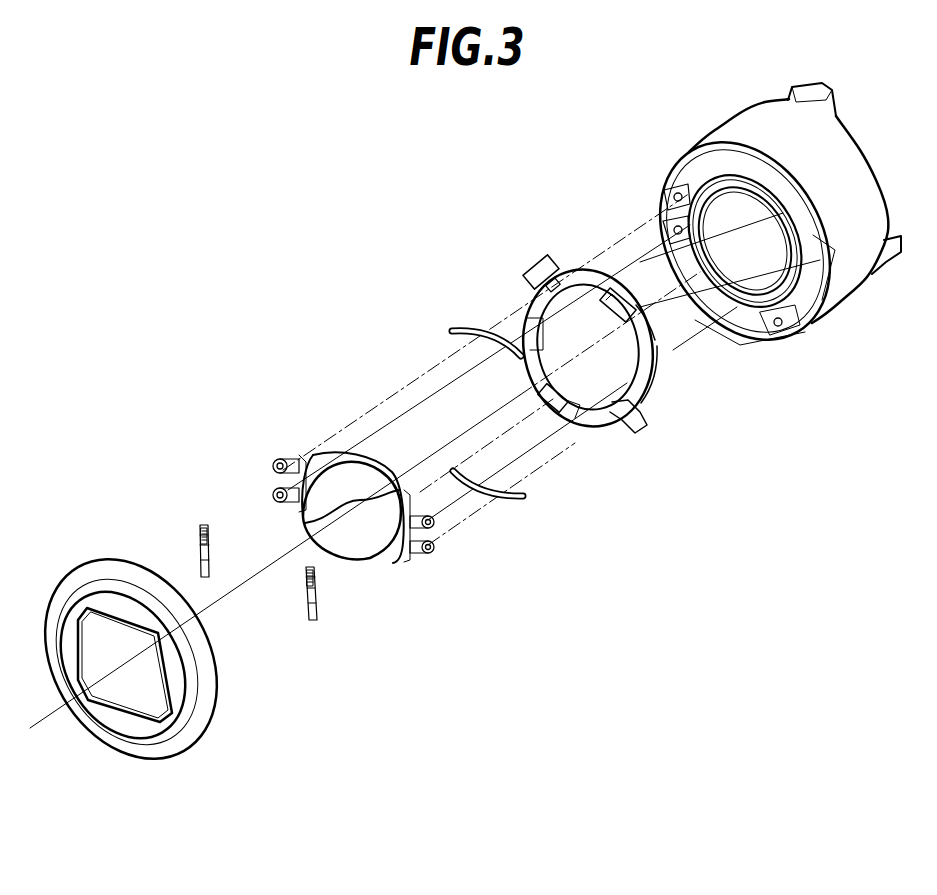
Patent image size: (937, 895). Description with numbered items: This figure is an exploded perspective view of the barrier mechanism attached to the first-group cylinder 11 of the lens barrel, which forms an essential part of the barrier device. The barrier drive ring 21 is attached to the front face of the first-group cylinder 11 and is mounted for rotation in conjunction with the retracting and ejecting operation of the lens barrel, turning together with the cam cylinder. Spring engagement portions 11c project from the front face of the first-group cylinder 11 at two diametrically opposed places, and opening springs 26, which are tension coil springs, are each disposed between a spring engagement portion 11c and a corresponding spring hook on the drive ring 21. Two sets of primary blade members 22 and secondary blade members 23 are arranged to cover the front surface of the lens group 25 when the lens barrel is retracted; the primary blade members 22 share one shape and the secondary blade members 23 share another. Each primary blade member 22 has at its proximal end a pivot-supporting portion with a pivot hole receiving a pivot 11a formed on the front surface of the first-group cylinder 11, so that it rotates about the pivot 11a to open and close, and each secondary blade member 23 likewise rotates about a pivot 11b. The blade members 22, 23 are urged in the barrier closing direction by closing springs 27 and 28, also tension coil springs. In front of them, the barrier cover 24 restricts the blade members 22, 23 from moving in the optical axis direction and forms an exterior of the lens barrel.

The first-group cylinder 11 is at (835, 290).
The pivot 11a is at (668, 233).
The pivot 11b is at (660, 198).
The spring engagement portion 11c is at (775, 330).
The barrier drive ring 21 is at (666, 405).
The primary blade member 22 is at (343, 550).
The secondary blade member 23 is at (306, 450).
The barrier cover 24 is at (202, 733).
The lens group 25 is at (693, 152).
The opening spring 26 is at (453, 330).
The closing spring 27 is at (200, 560).
The closing spring 28 is at (213, 525).